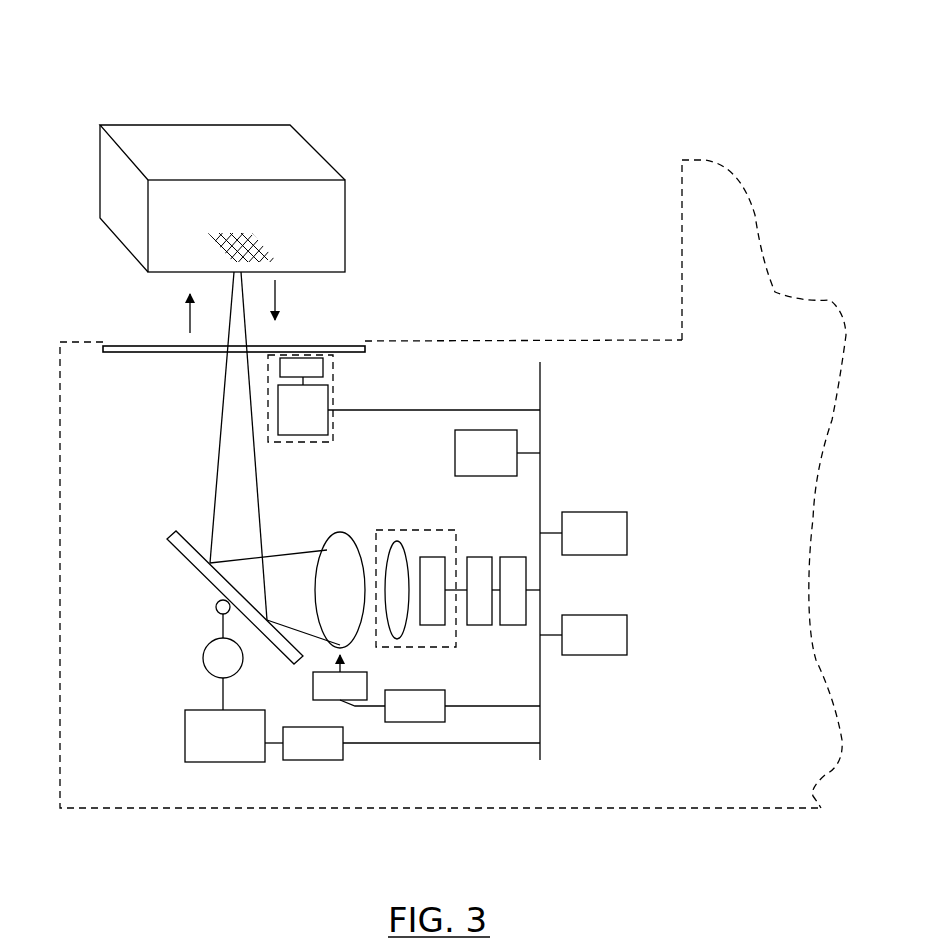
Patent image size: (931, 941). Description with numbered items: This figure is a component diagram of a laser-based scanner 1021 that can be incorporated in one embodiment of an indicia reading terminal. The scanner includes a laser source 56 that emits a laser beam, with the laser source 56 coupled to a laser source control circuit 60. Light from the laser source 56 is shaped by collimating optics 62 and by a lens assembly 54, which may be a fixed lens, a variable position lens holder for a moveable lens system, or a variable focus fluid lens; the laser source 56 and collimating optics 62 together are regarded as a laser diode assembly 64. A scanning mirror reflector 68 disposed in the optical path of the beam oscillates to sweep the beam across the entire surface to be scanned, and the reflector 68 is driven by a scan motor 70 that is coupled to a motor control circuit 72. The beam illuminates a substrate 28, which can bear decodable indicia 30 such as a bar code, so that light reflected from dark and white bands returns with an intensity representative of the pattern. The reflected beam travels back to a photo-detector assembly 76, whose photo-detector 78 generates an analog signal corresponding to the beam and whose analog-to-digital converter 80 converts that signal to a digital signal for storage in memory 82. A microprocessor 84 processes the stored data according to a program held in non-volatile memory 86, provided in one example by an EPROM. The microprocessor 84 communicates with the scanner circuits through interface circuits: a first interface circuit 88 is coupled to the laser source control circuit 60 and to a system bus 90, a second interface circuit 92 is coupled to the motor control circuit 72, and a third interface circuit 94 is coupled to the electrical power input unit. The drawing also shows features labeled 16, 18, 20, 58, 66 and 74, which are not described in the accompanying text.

The laser-based scanner 1021 is at (582, 72).
The housing enclosure 16 is at (605, 338).
The user/operator profile 18 is at (680, 196).
The window plate 20 is at (340, 341).
The substrate 28 is at (120, 225).
The decodable indicia 30 is at (262, 232).
The lens assembly 54 is at (323, 545).
The laser source 56 is at (437, 557).
The light beam 58 is at (240, 455).
The laser source control circuit 60 is at (479, 557).
The collimating optics 62 is at (397, 543).
The laser diode assembly 64 is at (430, 647).
The emitted light direction 66 is at (172, 313).
The scanning mirror reflector 68 is at (180, 532).
The scan motor 70 is at (203, 657).
The motor control circuit 72 is at (234, 736).
The incident light direction 74 is at (296, 300).
The photo-detector assembly 76 is at (320, 446).
The photo-detector 78 is at (325, 366).
The analog-to-digital converter 80 is at (409, 410).
The memory 82 is at (583, 533).
The microprocessor 84 is at (497, 453).
The non-volatile memory 86 is at (583, 635).
The first interface circuit 88 is at (512, 557).
The system bus 90 is at (542, 372).
The second interface circuit 92 is at (411, 743).
The third interface circuit 94 is at (462, 706).